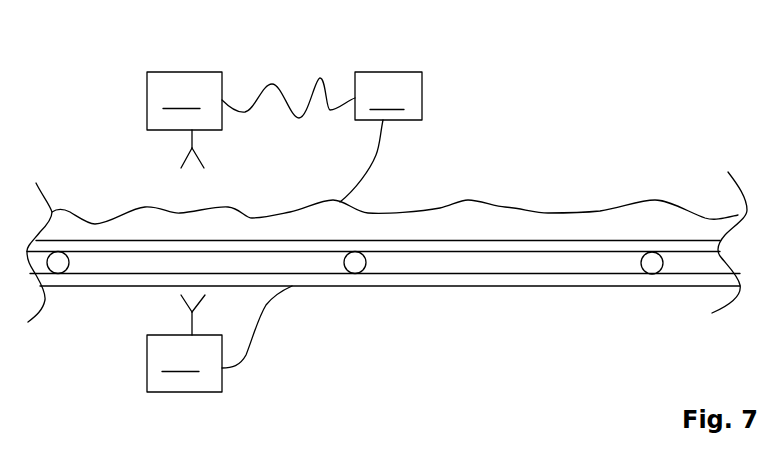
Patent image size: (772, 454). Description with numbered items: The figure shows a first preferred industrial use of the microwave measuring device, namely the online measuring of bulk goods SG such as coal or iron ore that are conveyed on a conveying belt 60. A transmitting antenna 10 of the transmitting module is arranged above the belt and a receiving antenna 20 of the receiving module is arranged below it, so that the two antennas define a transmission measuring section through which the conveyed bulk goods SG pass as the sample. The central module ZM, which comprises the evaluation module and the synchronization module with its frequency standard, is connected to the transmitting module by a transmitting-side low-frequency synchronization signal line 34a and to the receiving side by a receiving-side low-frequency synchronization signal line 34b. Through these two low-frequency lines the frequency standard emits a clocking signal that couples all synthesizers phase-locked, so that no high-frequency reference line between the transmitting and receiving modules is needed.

The transmitting antenna 10 is at (192, 147).
The receiving antenna 20 is at (192, 318).
The transmitting-side low-frequency synchronization signal line 34a is at (277, 86).
The receiving-side low-frequency synchronization signal line 34b is at (378, 150).
The bulk goods SG is at (550, 230).
The conveying belt 60 is at (500, 245).
The central module ZM is at (388, 96).